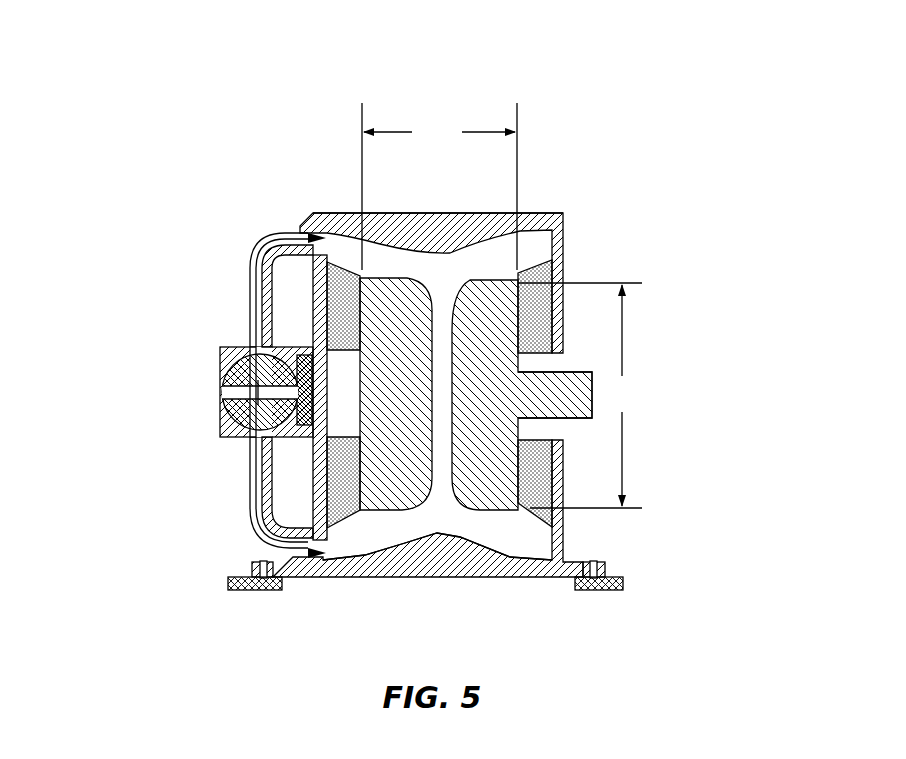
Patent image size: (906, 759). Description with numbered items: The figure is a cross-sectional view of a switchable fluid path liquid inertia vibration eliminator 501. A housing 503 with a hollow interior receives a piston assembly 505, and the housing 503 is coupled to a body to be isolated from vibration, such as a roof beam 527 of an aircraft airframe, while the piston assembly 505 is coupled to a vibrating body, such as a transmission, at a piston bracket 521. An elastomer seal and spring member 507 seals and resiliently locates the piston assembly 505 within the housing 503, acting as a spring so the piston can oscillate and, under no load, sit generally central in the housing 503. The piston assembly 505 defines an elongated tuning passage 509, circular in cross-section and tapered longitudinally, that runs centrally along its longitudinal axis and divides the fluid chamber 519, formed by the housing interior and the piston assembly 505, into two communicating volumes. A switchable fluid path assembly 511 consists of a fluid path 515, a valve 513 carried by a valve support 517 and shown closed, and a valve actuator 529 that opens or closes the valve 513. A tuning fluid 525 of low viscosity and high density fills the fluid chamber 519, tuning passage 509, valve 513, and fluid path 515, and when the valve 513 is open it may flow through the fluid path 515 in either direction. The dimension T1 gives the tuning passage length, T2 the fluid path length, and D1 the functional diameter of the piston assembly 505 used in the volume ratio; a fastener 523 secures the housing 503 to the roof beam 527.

The switchable fluid path liquid inertia vibration eliminator 501 is at (610, 80).
The housing 503 is at (330, 213).
The piston assembly 505 is at (398, 252).
The elastomer seal and spring member 507 is at (307, 215).
The tuning passage 509 is at (424, 252).
The switchable fluid path assembly 511 is at (260, 345).
The valve 513 is at (245, 392).
The fluid path 515 is at (253, 278).
The valve support 517 is at (221, 350).
The fluid chamber 519 is at (540, 217).
The piston bracket 521 is at (576, 372).
The fastener 523 is at (257, 563).
The tuning fluid 525 is at (425, 525).
The roof beam 527 is at (230, 578).
The valve actuator 529 is at (298, 432).
The functional diameter of the piston assembly D1 is at (440, 186).
The length of the tuning passage T1 is at (580, 395).
The length of the fluid path T2 is at (253, 502).